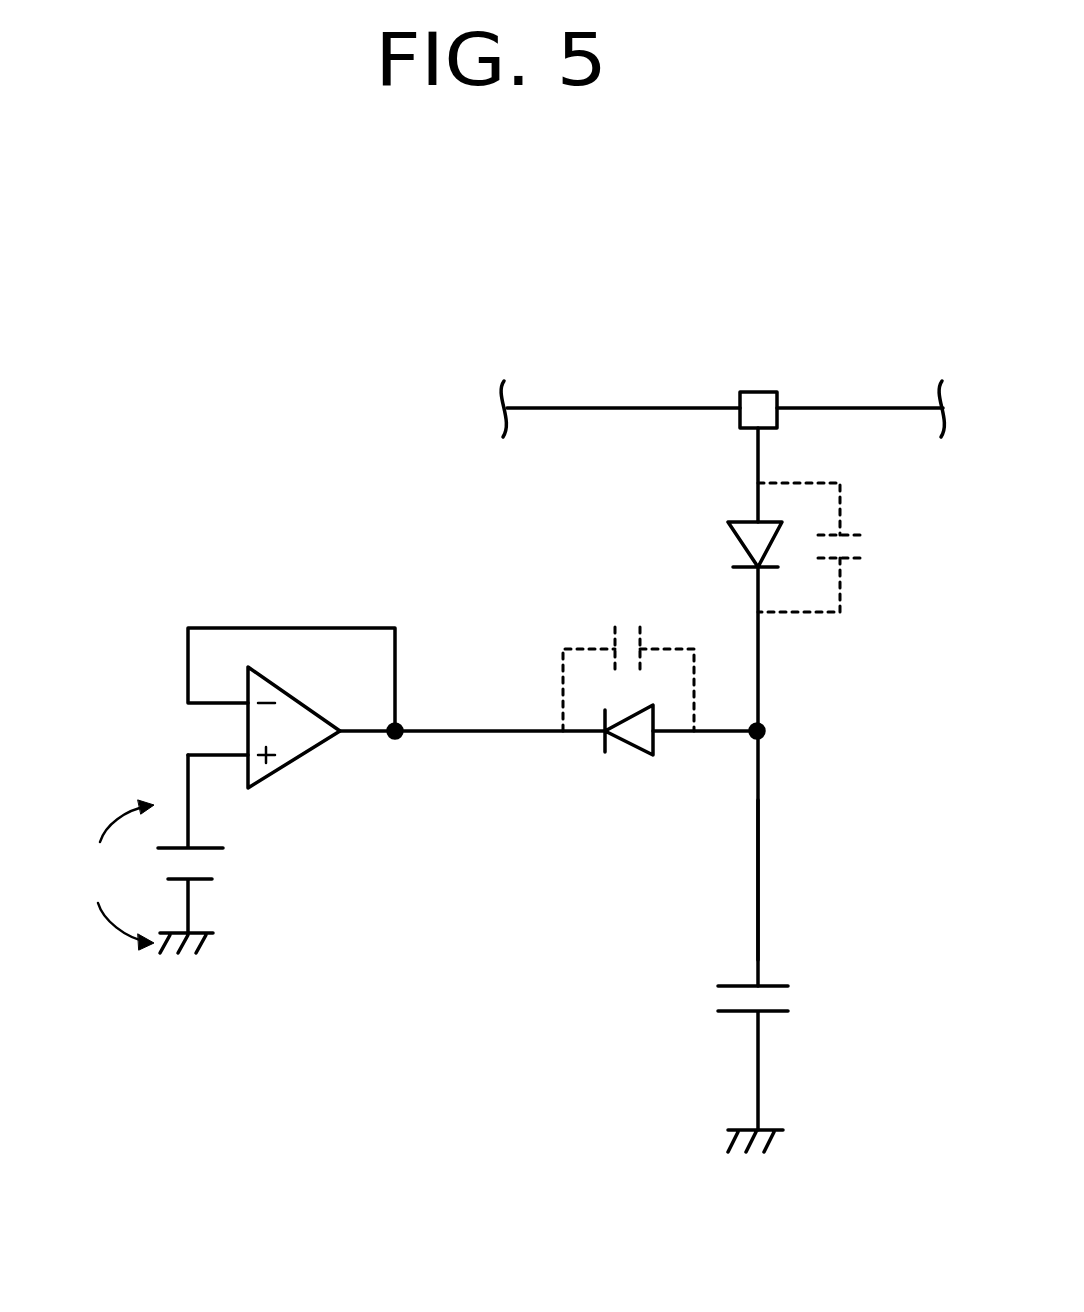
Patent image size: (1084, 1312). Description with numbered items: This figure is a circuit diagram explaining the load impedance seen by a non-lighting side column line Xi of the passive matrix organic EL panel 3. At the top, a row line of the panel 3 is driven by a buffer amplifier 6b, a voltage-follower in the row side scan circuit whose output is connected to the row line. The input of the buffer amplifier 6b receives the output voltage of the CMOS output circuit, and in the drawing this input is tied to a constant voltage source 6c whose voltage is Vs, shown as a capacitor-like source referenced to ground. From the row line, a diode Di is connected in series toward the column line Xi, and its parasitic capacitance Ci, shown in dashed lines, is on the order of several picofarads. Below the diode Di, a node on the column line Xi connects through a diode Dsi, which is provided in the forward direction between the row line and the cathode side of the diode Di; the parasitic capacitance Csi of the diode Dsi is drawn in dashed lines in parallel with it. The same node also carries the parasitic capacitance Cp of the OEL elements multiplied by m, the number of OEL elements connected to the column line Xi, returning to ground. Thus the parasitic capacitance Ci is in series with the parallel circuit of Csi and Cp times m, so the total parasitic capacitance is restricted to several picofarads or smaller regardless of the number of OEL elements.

The organic EL panel 3 is at (608, 408).
The buffer amplifier 6b is at (303, 755).
The constant voltage source 6c is at (212, 850).
The diode Di is at (728, 543).
The parasitic capacitance of diode Di Ci is at (842, 547).
The parasitic capacitance of diode Dsi Csi is at (628, 651).
The diode Dsi is at (628, 755).
The column line Xi is at (756, 872).
The parasitic capacitance of OEL element Cp is at (764, 1063).
The voltage of constant voltage source Vs is at (108, 875).